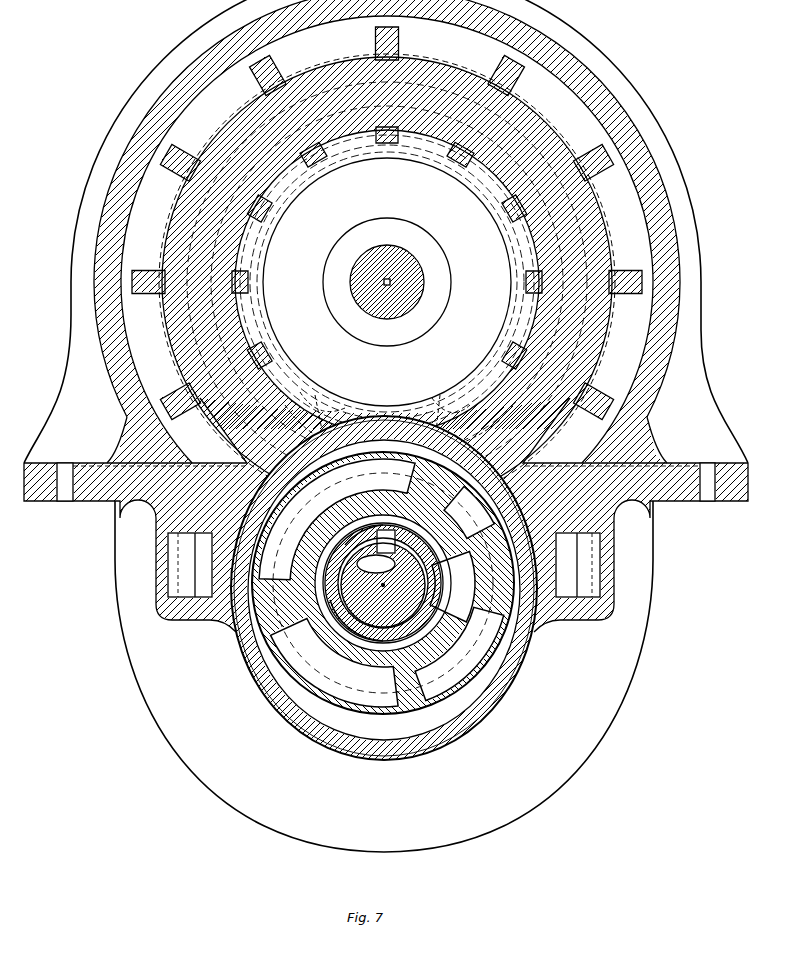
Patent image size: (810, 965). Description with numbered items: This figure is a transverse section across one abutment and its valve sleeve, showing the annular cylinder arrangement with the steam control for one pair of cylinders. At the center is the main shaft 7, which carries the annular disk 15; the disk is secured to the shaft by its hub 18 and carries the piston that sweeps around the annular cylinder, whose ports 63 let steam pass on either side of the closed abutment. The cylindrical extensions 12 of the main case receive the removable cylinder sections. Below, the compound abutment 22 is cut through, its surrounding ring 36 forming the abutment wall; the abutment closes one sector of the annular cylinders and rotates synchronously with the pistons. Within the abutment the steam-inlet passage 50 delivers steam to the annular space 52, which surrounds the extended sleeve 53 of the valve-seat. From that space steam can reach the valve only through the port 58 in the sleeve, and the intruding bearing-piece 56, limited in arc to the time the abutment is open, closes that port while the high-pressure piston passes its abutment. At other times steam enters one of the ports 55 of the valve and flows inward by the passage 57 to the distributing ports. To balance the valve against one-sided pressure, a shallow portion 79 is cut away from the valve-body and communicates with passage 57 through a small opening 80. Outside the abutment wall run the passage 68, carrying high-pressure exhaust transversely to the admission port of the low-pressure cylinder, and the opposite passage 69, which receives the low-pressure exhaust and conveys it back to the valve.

The extensions 12 is at (206, 45).
The shaft 7 is at (394, 252).
The hub 18 is at (430, 248).
The annular disk 15 is at (387, 282).
The cylinder port 63 is at (334, 398).
The housing ring 36 is at (531, 503).
The abutment 22 is at (544, 665).
The passage 68 is at (217, 633).
The port and passage 69 is at (186, 563).
The sleeve of the valve-seat 53 is at (383, 583).
The bearing-piece 56 is at (348, 501).
The shallow portion 79 is at (435, 649).
The port 55 is at (336, 550).
The annular space 52 is at (383, 590).
The small opening 80 is at (331, 622).
The steam-inlet passage 50 is at (367, 523).
The passage 57 is at (383, 585).
The port 58 is at (386, 541).